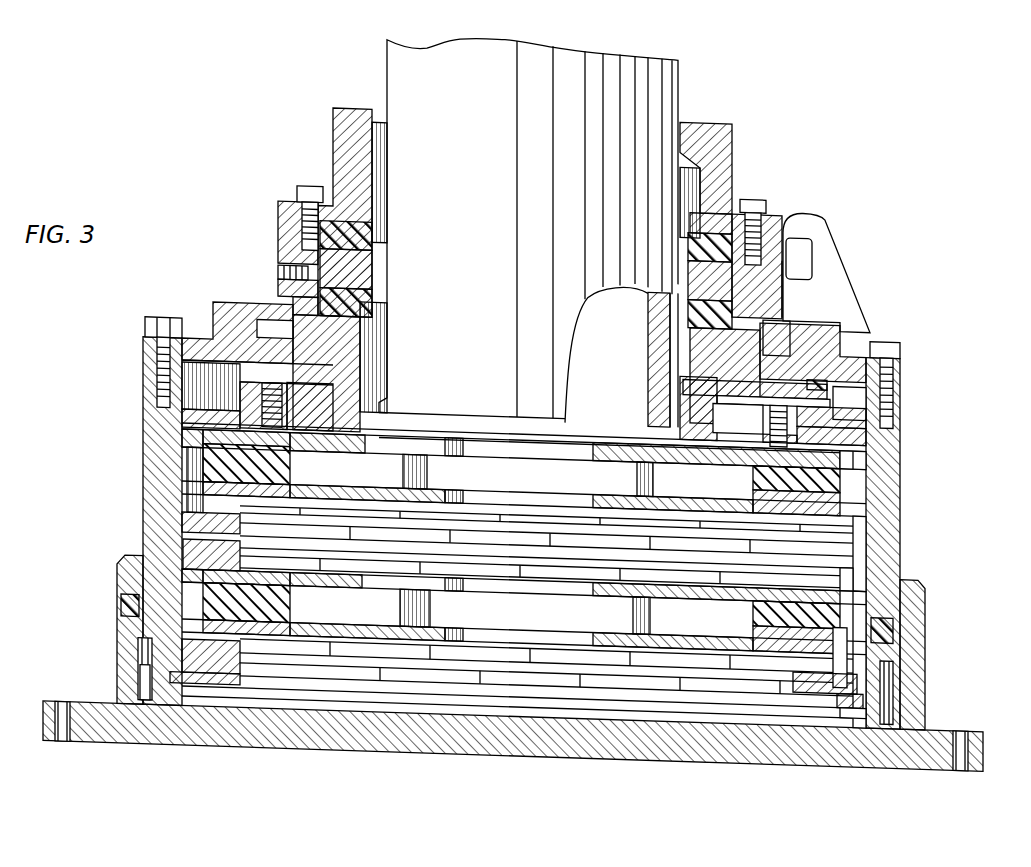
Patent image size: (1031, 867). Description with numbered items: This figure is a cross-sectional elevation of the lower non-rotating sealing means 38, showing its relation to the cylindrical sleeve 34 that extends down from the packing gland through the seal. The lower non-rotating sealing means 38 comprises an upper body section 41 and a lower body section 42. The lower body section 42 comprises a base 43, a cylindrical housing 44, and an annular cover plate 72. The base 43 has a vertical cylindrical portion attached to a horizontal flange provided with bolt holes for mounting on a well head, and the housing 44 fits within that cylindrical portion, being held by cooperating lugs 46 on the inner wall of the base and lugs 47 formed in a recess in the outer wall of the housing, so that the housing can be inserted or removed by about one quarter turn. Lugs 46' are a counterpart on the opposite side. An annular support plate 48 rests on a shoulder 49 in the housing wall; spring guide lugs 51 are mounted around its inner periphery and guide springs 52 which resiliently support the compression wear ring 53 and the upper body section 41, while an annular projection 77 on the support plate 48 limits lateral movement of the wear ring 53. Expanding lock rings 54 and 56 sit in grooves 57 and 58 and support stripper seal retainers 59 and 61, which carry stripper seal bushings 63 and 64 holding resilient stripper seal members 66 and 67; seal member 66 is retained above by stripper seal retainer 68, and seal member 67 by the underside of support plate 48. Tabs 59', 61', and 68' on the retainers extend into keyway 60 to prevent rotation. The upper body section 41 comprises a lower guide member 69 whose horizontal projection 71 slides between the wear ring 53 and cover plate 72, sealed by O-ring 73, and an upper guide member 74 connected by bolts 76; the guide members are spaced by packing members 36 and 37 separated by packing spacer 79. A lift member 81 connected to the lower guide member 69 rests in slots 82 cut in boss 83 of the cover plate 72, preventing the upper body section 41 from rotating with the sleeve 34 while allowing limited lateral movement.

The cylindrical sleeve 34 is at (682, 82).
The upper guide member 74 is at (733, 114).
The bolts 76 is at (766, 174).
The upper body section 41 is at (848, 152).
The upper body section lift member 81 is at (825, 190).
The resilient annular packing member 36 is at (372, 228).
The annular packing spacer 79 is at (370, 252).
The resilient annular packing member 37 is at (385, 290).
The boss 83 is at (817, 296).
The lower non-rotating sealing means 38 is at (125, 304).
The annular cover plate 72 is at (185, 312).
The slots 82 is at (280, 300).
The horizontal projection 71 is at (740, 362).
The O-ring 73 is at (820, 361).
The annular projection 77 is at (792, 377).
The compression wear ring 53 is at (745, 381).
The springs 52 is at (770, 390).
The spring guide lugs 51 is at (797, 390).
The annular support plate 48 is at (830, 405).
The lower guide member 69 is at (706, 407).
The ledge or shoulder 49 is at (868, 434).
The cylindrical housing 44 is at (868, 456).
The lower body section 42 is at (932, 464).
The stripper seal member 67 is at (750, 461).
The groove 58 is at (146, 510).
The stripper seal bushing 64 is at (810, 510).
The tab 61' is at (894, 555).
The expanding lock ring 56 is at (860, 535).
The stripper seal retainer 61 is at (546, 568).
The stripper seal retainer 68 is at (546, 572).
The tab 68' is at (897, 578).
The stripper seal member 66 is at (726, 600).
The groove 57 is at (150, 657).
The pin 46' is at (110, 679).
The keyway 60 is at (841, 642).
The base 43 is at (920, 612).
The stripper seal retainer 59 is at (222, 673).
The stripper seal bushing 63 is at (785, 668).
The tab 59' is at (823, 710).
The expanding lock ring 54 is at (846, 717).
The lugs 46 is at (914, 693).
The lugs 47 is at (900, 690).